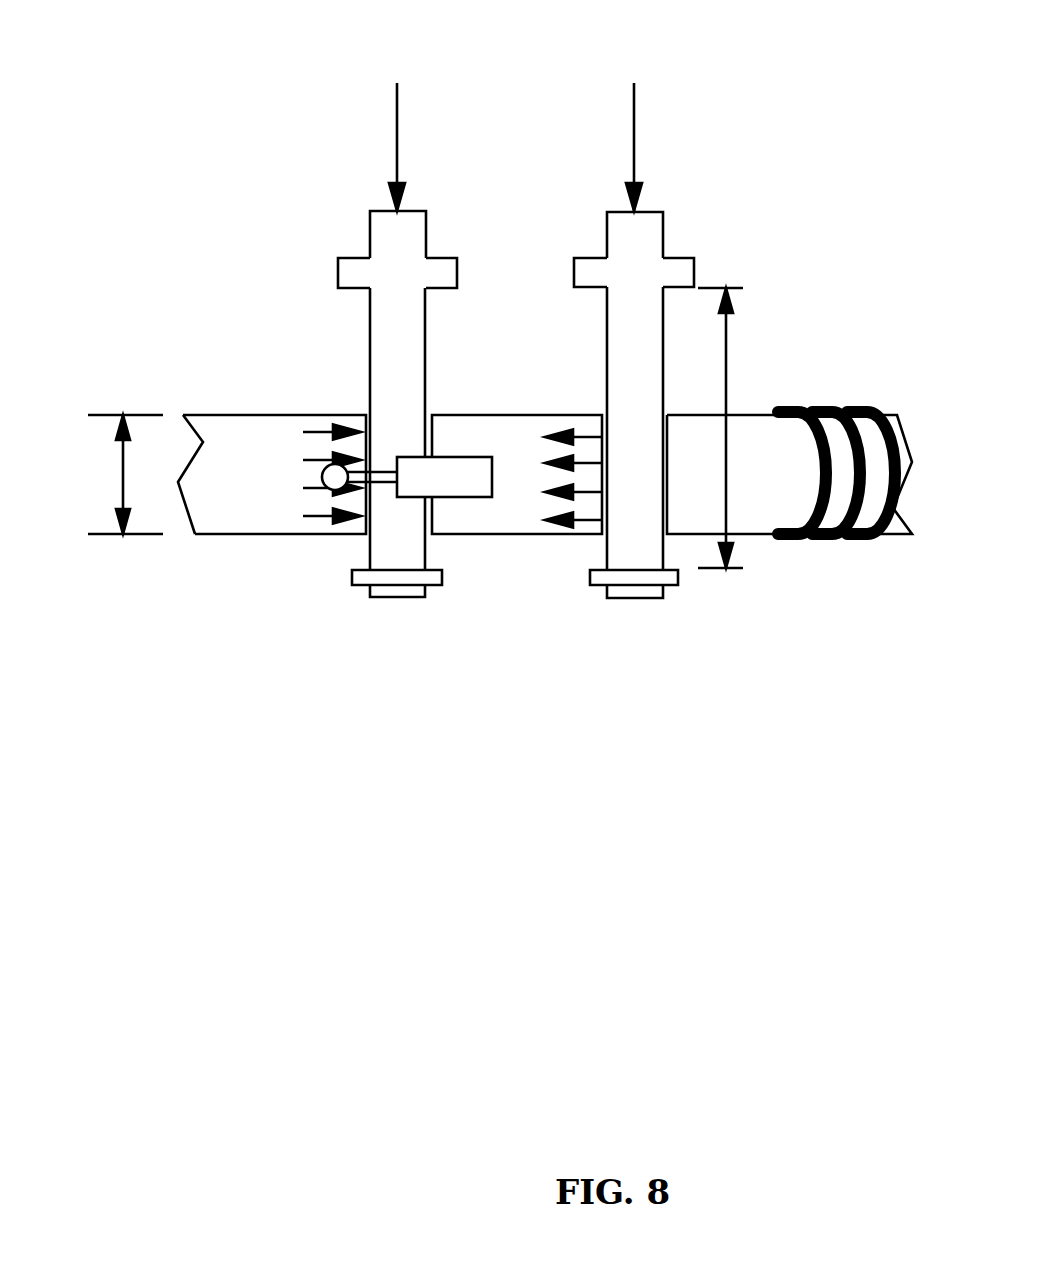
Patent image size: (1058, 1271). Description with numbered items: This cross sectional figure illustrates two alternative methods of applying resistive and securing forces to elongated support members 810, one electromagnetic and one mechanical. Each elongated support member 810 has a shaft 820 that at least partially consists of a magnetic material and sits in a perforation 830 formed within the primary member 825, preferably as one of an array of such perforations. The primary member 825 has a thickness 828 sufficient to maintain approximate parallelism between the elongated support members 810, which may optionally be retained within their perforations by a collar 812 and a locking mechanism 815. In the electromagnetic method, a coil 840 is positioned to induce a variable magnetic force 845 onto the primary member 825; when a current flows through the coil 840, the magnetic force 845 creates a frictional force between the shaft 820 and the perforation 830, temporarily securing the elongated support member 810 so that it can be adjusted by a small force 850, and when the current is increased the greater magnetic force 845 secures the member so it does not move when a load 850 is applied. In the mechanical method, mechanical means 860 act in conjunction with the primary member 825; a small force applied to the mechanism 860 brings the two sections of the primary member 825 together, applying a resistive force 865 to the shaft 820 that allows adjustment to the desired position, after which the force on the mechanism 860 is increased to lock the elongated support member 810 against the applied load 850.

The elongated support member 810 is at (426, 240).
The collar 812 is at (337, 273).
The locking mechanism 815 is at (678, 580).
The shaft 820 is at (727, 347).
The primary member 825 is at (238, 415).
The thickness 828 is at (127, 472).
The perforation 830 is at (605, 415).
The coil 840 is at (797, 402).
The magnetic force 845 is at (585, 522).
The load 850 is at (630, 118).
The mechanical means 860 is at (400, 508).
The resistive force 865 is at (317, 428).